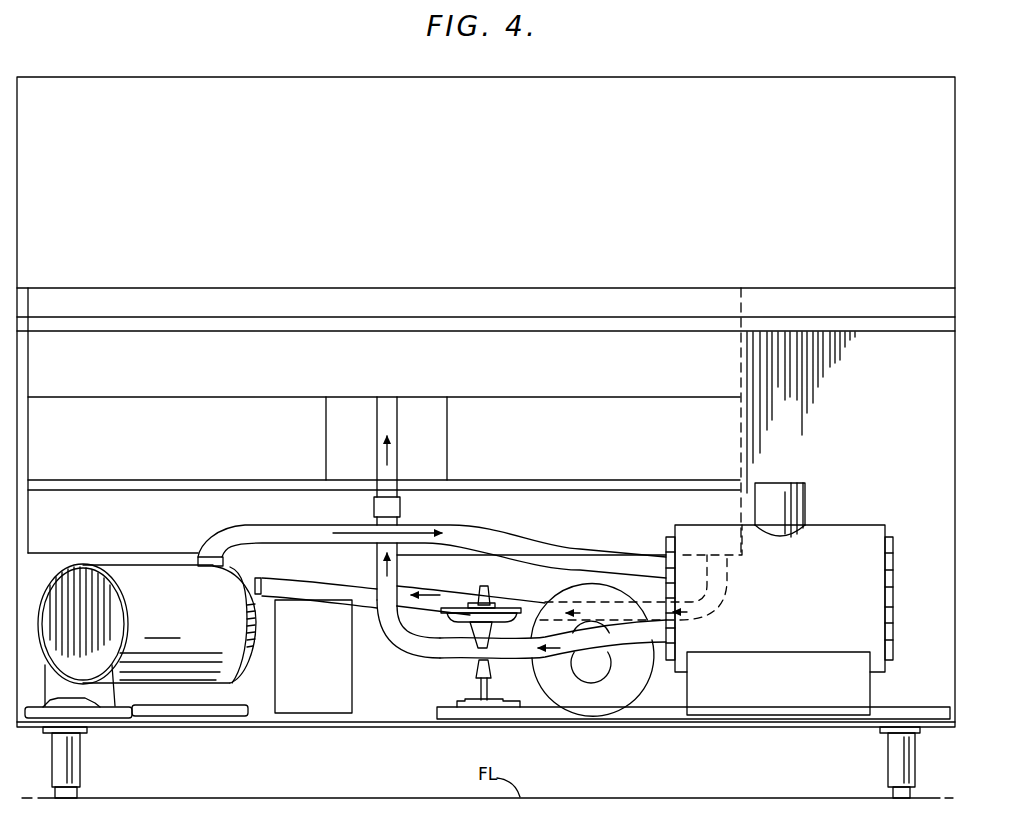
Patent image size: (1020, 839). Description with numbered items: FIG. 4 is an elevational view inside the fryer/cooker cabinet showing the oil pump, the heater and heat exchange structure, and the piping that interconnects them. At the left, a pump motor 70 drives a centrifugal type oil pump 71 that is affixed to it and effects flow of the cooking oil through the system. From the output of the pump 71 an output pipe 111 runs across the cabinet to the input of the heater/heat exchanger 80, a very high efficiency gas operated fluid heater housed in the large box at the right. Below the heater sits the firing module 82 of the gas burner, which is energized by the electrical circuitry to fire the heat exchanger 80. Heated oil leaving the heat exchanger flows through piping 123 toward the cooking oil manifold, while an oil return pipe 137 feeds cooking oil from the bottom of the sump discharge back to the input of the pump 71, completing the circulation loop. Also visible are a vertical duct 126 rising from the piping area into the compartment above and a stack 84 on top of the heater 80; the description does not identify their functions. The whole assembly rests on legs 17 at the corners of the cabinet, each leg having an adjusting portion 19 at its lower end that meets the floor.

The legs 17 is at (893, 750).
The adjusting portions 19 is at (895, 796).
The pump motor 70 is at (173, 600).
The centrifugal type oil pump 71 is at (235, 577).
The heater/heat exchanger 80 is at (798, 603).
The firing module 82 is at (795, 695).
The exhaust stack 84 is at (785, 494).
The output pipe 111 is at (495, 545).
The piping 123 is at (452, 652).
The vertical duct 126 is at (392, 420).
The oil return pipe 137 is at (365, 597).